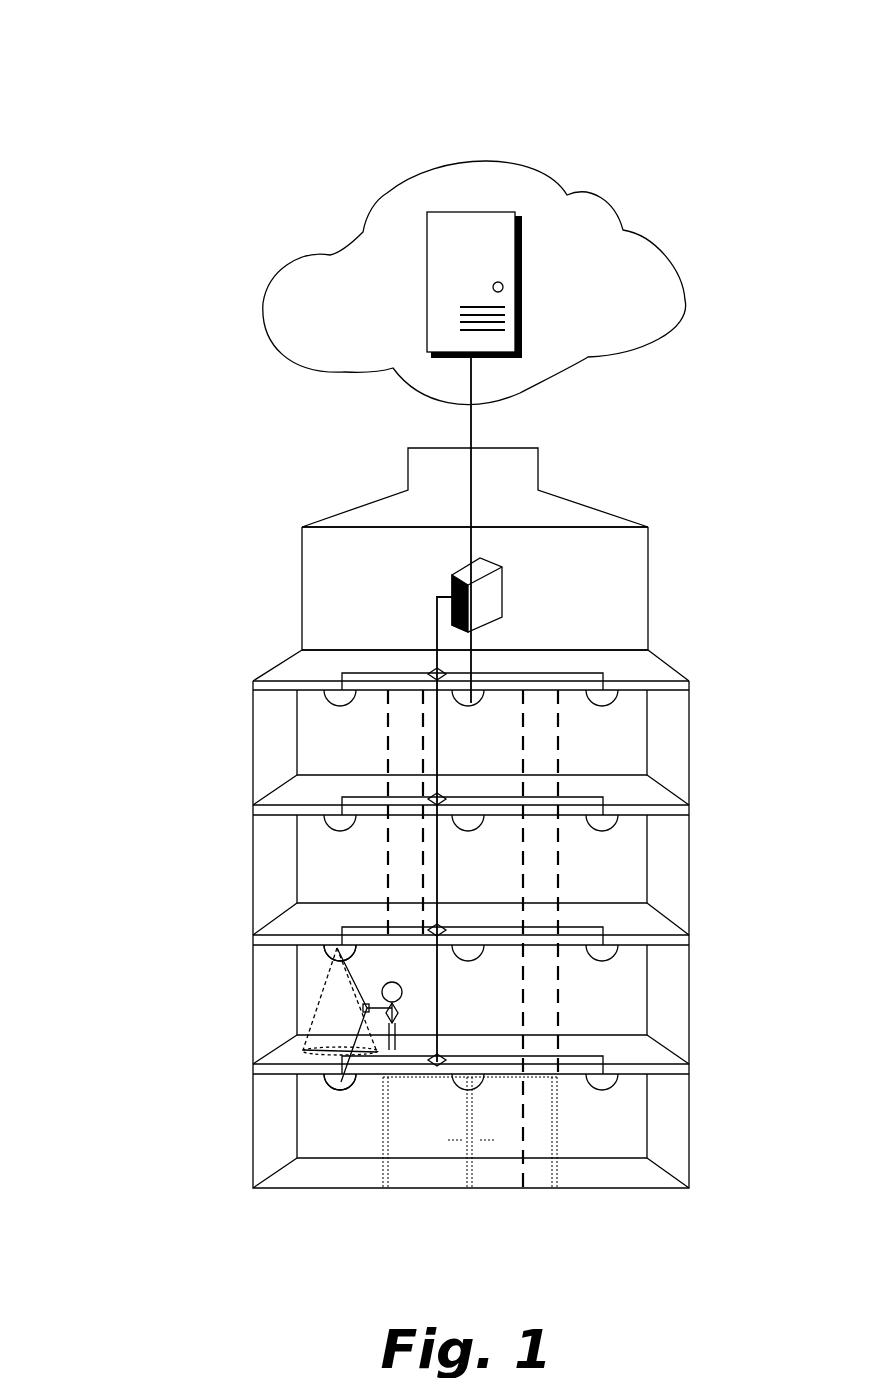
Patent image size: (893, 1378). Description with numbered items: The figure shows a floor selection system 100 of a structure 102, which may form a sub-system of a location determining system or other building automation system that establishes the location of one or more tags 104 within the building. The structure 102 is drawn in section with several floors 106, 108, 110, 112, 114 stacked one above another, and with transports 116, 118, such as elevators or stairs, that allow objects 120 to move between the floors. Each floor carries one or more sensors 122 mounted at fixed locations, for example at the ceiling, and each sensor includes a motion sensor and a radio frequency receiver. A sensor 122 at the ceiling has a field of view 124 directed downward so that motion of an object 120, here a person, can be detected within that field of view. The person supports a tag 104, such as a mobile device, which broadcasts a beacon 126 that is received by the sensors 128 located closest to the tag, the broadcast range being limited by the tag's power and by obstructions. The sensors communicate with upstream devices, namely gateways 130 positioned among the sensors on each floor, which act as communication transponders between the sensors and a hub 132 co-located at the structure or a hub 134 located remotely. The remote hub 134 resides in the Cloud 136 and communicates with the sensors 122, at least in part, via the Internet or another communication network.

The floor selection system 100 is at (138, 73).
The structure 102 is at (302, 527).
The tag 104 is at (366, 1008).
The floor 106 is at (663, 1138).
The floor 108 is at (663, 1017).
The floor 110 is at (663, 878).
The floor 112 is at (663, 757).
The floor 114 is at (628, 598).
The transport 116 is at (403, 863).
The transport 118 is at (542, 863).
The object 120 is at (397, 1004).
The sensor 122 is at (332, 694).
The field of view 124 is at (357, 1030).
The beacon 126 is at (347, 969).
The sensors located closest to the tag 128 is at (323, 949).
The gateway 130 is at (438, 668).
The hub 132 is at (468, 590).
The hub 134 is at (470, 212).
The Cloud 136 is at (293, 262).